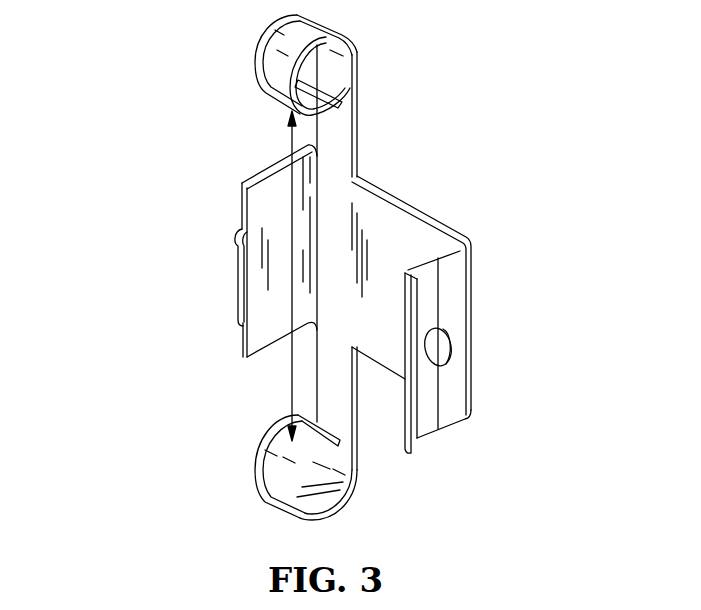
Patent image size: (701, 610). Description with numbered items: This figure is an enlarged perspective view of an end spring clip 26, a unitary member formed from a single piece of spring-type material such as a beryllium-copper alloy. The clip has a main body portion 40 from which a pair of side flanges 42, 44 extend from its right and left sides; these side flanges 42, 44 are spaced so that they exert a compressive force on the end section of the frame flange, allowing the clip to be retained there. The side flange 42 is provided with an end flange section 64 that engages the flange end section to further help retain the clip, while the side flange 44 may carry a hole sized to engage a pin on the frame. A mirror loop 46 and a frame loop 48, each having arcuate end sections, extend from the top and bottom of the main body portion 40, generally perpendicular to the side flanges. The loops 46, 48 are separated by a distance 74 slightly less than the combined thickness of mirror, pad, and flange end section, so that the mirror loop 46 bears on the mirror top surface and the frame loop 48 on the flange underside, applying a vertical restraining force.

The end spring clip 26 is at (155, 54).
The main body portion 40 is at (412, 205).
The side flange 42 is at (242, 203).
The side flange 44 is at (447, 427).
The mirror loop 46 is at (254, 68).
The frame loop 48 is at (258, 463).
The end flange section 64 is at (240, 281).
The distance 74 is at (290, 360).